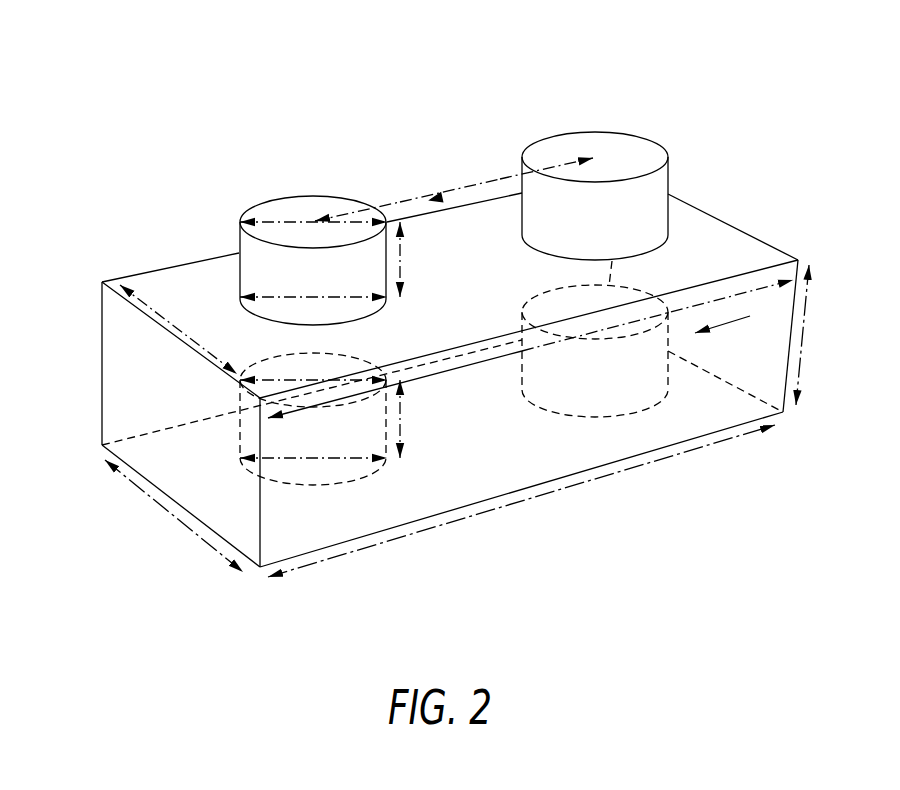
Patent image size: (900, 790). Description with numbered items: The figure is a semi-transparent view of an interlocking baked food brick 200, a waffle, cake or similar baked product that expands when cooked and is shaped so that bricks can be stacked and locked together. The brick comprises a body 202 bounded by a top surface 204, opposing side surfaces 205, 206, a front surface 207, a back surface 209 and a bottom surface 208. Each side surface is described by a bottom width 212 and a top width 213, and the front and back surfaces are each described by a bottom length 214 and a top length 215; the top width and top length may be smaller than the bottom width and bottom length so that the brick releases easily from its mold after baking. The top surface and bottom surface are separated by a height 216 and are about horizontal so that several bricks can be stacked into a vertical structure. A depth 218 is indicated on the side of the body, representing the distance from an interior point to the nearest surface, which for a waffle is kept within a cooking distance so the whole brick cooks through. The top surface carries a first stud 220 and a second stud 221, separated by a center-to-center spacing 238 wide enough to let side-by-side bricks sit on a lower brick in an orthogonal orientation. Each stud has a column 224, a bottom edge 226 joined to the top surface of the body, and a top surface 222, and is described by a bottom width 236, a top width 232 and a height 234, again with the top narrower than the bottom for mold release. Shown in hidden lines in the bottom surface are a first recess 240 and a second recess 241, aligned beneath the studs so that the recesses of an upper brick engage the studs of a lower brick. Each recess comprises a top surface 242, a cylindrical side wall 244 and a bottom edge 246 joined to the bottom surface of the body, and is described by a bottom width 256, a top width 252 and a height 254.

The interlocking baked food brick 200 is at (273, 125).
The body 202 is at (149, 287).
The top surface 204 is at (155, 272).
The side surface 205 is at (148, 355).
The side surface 206 is at (717, 212).
The front surface 207 is at (427, 499).
The bottom surface 208 is at (257, 577).
The back surface 209 is at (430, 200).
The bottom width 212 is at (130, 482).
The top width 213 is at (147, 311).
The bottom length 214 is at (532, 502).
The top length 215 is at (738, 293).
The height 216 is at (805, 345).
The depth 218 is at (728, 330).
The first stud 220 is at (267, 205).
The second stud 221 is at (584, 131).
The top surface 222 is at (305, 222).
The column 224 is at (240, 246).
The bottom edge 226 is at (236, 300).
The top width 232 is at (318, 212).
The height 234 is at (402, 257).
The bottom width 236 is at (272, 289).
The center-to-center spacing 238 is at (482, 182).
The first recess 240 is at (312, 478).
The second recess 241 is at (618, 420).
The top surface 242 is at (272, 372).
The cylindrical side wall 244 is at (237, 430).
The bottom edge 246 is at (372, 477).
The top width 252 is at (305, 383).
The height 254 is at (402, 425).
The bottom width 256 is at (272, 456).